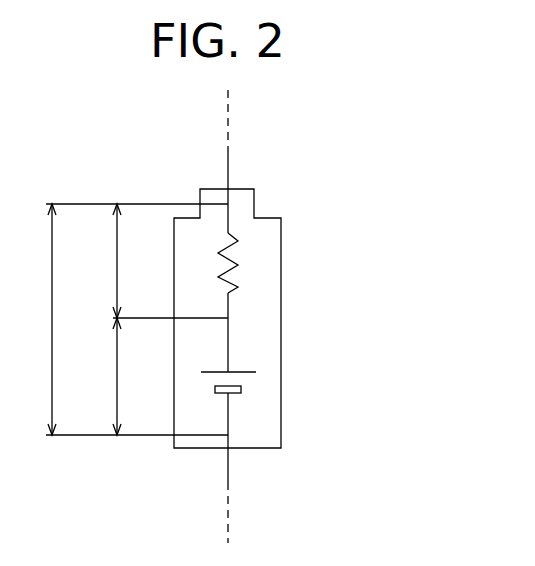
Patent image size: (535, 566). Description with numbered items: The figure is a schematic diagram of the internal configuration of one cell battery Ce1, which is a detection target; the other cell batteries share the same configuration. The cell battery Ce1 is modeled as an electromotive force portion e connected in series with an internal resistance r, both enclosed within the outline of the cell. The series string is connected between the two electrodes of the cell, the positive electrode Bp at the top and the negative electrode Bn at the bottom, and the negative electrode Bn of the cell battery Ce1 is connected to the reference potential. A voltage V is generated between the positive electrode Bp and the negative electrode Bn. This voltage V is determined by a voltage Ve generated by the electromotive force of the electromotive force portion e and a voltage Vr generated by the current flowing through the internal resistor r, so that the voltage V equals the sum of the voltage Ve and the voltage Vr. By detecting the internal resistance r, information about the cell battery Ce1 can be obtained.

The cell battery Ce1 is at (282, 317).
The positive electrode Bp is at (249, 161).
The negative electrode Bn is at (248, 495).
The internal resistance r is at (237, 302).
The electromotive force portion e is at (234, 410).
The voltage V is at (41, 319).
The voltage generated by the current flowing through the internal resistor Vr is at (98, 261).
The voltage generated by the electromotive force Ve is at (99, 376).